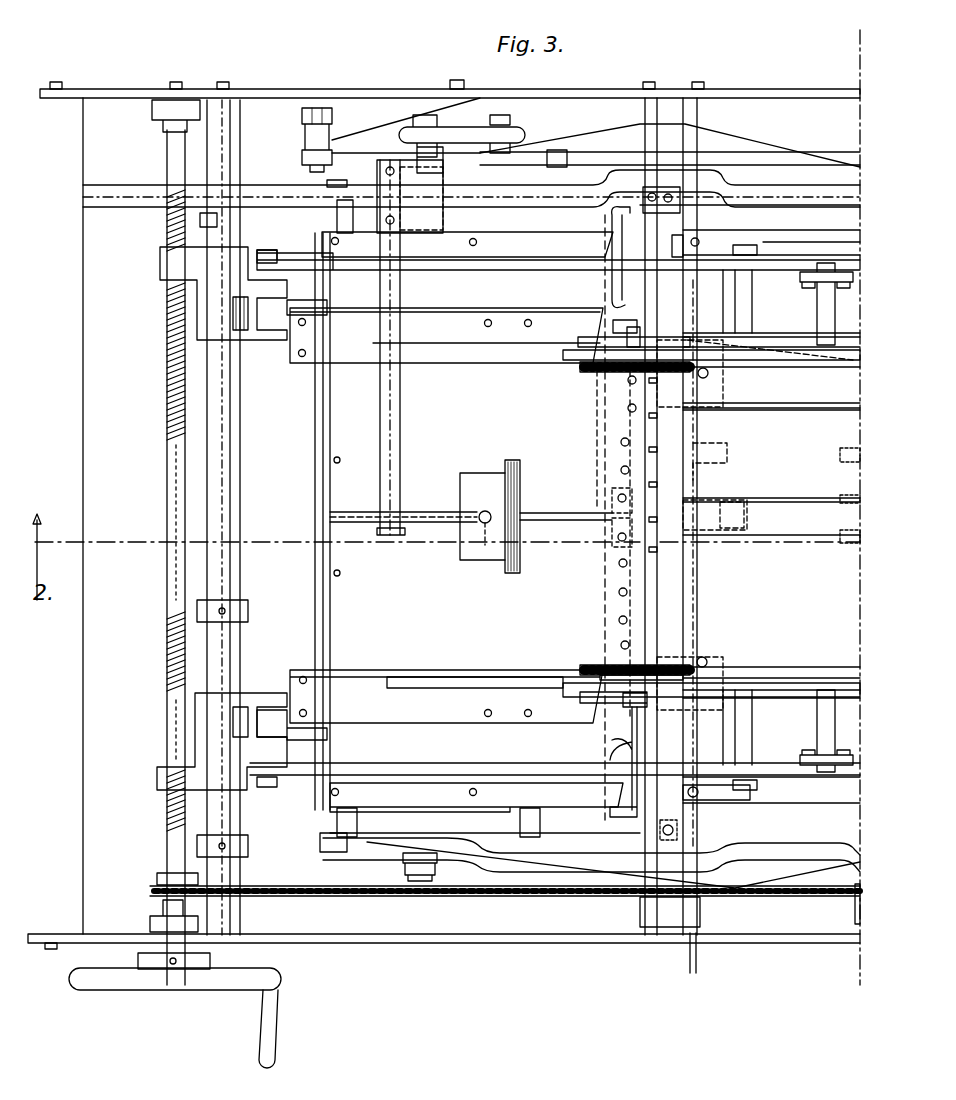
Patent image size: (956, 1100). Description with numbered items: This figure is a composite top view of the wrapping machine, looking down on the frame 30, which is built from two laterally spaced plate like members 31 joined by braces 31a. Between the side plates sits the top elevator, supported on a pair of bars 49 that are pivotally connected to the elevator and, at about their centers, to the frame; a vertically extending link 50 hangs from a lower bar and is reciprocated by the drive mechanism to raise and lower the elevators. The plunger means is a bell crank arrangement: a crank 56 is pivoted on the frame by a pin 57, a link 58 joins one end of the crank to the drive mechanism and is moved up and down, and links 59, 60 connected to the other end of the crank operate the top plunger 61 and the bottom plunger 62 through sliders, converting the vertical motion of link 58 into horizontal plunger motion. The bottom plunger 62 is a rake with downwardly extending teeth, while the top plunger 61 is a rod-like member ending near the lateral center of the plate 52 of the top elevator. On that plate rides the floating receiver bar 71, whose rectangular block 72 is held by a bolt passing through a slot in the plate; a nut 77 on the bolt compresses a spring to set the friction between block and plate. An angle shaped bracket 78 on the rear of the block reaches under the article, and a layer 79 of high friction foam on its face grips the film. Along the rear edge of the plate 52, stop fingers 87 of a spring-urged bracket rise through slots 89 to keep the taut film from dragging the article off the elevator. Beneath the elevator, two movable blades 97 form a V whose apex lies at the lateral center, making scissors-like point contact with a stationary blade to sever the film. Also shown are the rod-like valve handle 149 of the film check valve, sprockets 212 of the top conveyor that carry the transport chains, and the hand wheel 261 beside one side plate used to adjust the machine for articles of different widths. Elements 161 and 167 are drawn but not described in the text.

The frame 30 is at (600, 960).
The plate like members 31 is at (595, 93).
The braces 31a is at (68, 451).
The bars 49 is at (724, 145).
The link 50 is at (403, 870).
The plate 52 is at (553, 434).
The crank 56 is at (372, 132).
The pin 57 is at (455, 82).
The link 58 is at (300, 132).
The link 59 is at (512, 133).
The link 60 is at (603, 158).
The top plunger 61 is at (420, 510).
The bottom plunger 62 is at (844, 450).
The floating receiver bar 71 is at (476, 532).
The block 72 is at (465, 556).
The nut 77 is at (485, 510).
The angle shaped bracket 78 is at (505, 572).
The layer of high friction material 79 is at (578, 522).
The stop fingers 87 is at (622, 470).
The slots 89 is at (628, 408).
The movable blades 97 is at (633, 230).
The valve handle 149 is at (688, 965).
The plate 161 is at (370, 708).
The slotted bar 167 is at (487, 688).
The sprockets 212 is at (690, 365).
The hand wheel 261 is at (117, 982).